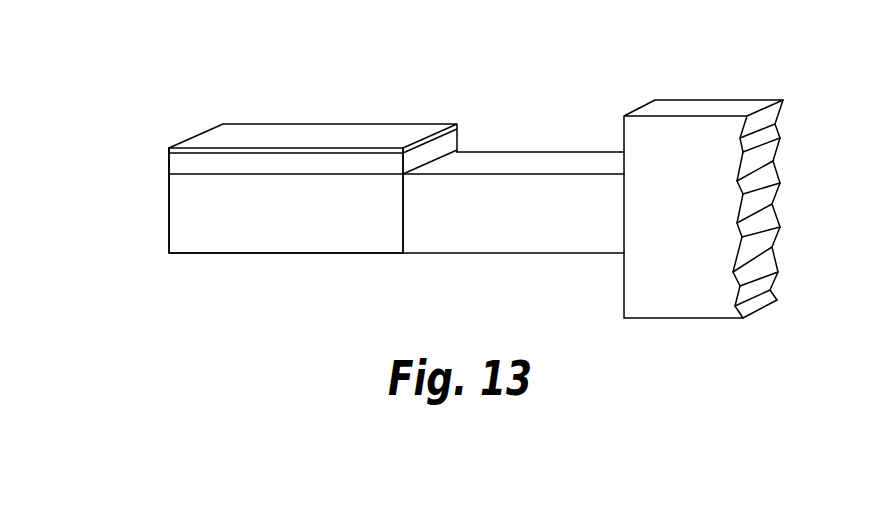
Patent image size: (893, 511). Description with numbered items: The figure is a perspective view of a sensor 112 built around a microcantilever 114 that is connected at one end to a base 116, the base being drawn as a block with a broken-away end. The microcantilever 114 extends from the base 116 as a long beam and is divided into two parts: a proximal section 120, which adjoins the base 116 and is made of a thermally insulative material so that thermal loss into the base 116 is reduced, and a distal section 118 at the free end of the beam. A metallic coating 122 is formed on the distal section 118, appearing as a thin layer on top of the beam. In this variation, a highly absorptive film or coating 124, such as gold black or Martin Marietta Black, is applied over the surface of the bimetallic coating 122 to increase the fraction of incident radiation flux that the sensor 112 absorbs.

The sensor 112 is at (140, 210).
The microcantilever 114 is at (323, 261).
The base 116 is at (702, 105).
The distal section 118 is at (221, 254).
The proximal section 120 is at (545, 254).
The metallic coating 122 is at (168, 166).
The absorptive coating 124 is at (323, 135).